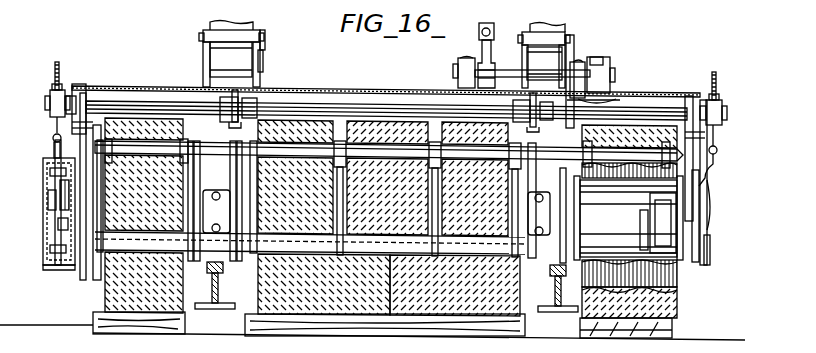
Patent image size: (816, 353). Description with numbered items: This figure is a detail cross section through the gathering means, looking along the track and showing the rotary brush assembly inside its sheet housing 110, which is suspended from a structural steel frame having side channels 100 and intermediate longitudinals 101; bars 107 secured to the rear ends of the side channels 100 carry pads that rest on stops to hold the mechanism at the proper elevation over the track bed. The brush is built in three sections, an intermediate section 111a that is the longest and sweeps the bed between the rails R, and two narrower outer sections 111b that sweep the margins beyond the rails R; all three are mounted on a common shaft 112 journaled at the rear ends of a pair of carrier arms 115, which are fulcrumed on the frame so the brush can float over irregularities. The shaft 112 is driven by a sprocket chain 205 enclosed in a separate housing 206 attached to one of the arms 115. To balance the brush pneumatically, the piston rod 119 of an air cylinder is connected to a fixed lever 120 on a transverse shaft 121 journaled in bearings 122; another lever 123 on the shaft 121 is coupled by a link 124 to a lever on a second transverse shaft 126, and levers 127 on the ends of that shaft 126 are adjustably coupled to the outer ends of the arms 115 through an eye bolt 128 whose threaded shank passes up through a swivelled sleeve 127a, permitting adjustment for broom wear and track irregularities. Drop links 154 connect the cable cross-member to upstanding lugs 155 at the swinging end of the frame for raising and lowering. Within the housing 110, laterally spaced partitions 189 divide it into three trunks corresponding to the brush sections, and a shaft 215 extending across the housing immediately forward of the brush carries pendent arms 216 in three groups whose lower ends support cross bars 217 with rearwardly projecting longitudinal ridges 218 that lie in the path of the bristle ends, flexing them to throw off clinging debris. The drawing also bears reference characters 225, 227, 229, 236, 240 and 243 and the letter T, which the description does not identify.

The side channels 100 is at (110, 88).
The intermediate longitudinals 101 is at (228, 124).
The bars 107 is at (250, 74).
The sheet housing 110 is at (332, 101).
The intermediate brush section 111a is at (290, 316).
The outer brush sections 111b is at (140, 312).
The shaft 112 is at (628, 210).
The carrier arms 115 is at (55, 196).
The piston rod 119 is at (486, 32).
The fixed lever 120 is at (478, 53).
The transverse shaft 121 is at (458, 67).
The bearings 122 is at (456, 89).
The lever 123 is at (576, 63).
The link 124 is at (599, 99).
The transverse shaft 126 is at (387, 113).
The levers 127 is at (50, 88).
The swivelled sleeve 127a is at (50, 100).
The eye bolt 128 is at (52, 136).
The drop links 154 is at (212, 48).
The upstanding lugs 155 is at (258, 39).
The partitions 189 is at (240, 138).
The sprocket chain 205 is at (58, 240).
The housing 206 is at (45, 260).
The shaft 215 is at (386, 140).
The pendent arms 216 is at (168, 192).
The cross bars 217 is at (390, 252).
The longitudinal ridges 218 is at (140, 238).
The roller 225 is at (644, 253).
The brush 227 is at (690, 280).
The bristles 229 is at (666, 304).
The standard 236 is at (90, 270).
The bearing bracket 240 is at (216, 208).
The shaft 243 is at (660, 220).
The rails R is at (215, 310).
The tie T is at (590, 330).